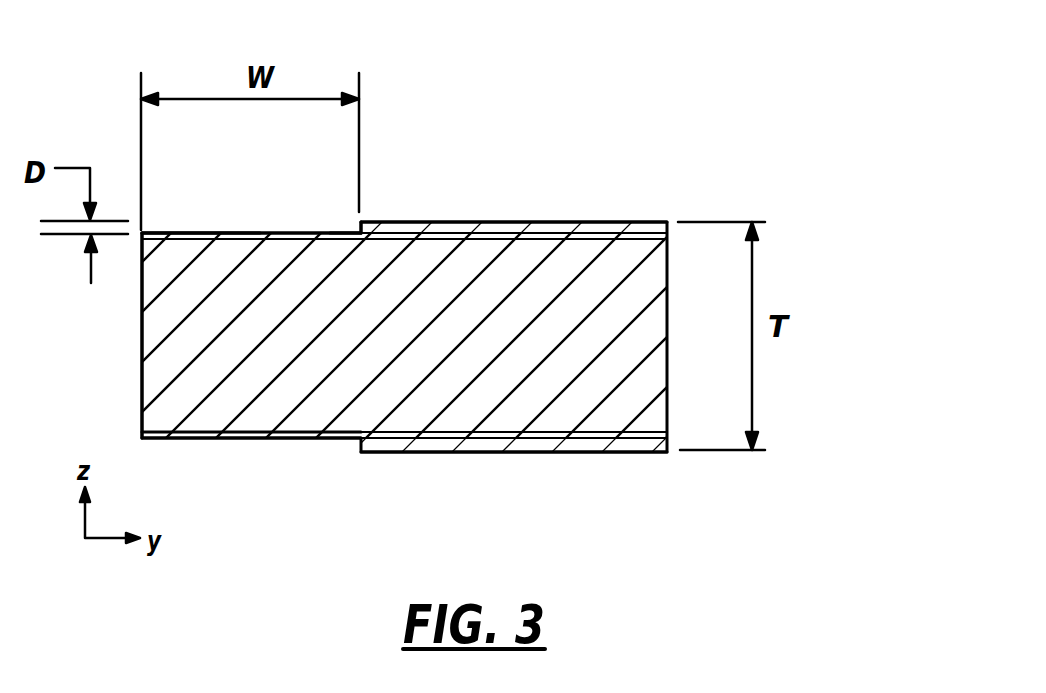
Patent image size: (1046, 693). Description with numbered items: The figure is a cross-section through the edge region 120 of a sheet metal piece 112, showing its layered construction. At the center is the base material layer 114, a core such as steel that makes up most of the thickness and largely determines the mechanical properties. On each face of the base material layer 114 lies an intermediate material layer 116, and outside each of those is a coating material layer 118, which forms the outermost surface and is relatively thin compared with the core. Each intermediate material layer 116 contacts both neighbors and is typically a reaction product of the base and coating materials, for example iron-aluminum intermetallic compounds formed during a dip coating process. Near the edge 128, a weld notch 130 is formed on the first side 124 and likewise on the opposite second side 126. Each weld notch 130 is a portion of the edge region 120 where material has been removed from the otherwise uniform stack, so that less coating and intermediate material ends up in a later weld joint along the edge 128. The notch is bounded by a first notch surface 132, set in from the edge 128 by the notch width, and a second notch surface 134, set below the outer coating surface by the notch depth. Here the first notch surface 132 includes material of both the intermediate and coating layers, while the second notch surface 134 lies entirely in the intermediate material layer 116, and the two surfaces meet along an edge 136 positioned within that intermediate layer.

The sheet metal piece 112 is at (635, 148).
The base material layer 114 is at (668, 306).
The intermediate material layer 116 is at (620, 222).
The coating material layer 118 is at (553, 222).
The edge region 120 is at (289, 449).
The first side 124 is at (468, 222).
The second side 126 is at (555, 452).
The edge 128 is at (142, 326).
The weld notch 130 is at (257, 228).
The first notch surface 132 is at (357, 224).
The second notch surface 134 is at (202, 232).
The edge 136 is at (357, 233).